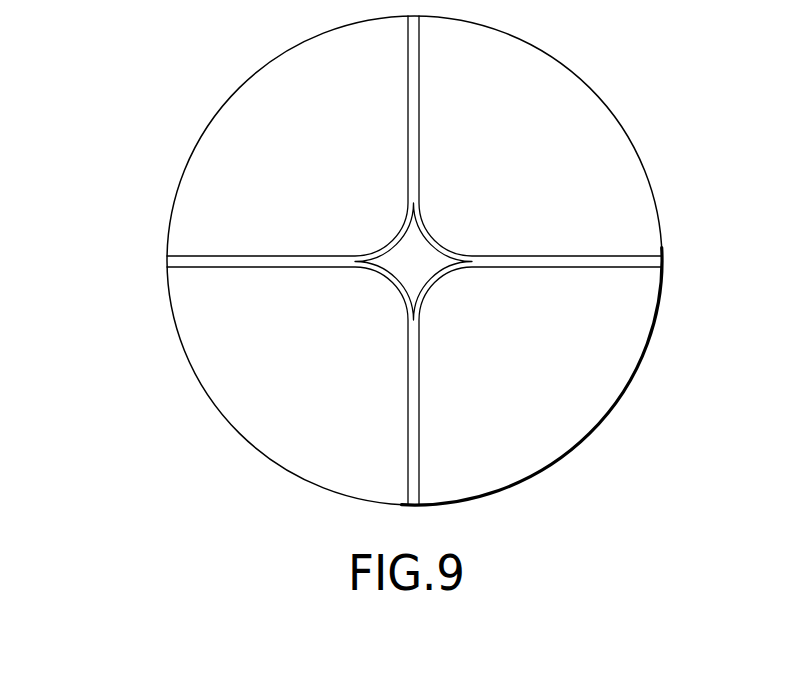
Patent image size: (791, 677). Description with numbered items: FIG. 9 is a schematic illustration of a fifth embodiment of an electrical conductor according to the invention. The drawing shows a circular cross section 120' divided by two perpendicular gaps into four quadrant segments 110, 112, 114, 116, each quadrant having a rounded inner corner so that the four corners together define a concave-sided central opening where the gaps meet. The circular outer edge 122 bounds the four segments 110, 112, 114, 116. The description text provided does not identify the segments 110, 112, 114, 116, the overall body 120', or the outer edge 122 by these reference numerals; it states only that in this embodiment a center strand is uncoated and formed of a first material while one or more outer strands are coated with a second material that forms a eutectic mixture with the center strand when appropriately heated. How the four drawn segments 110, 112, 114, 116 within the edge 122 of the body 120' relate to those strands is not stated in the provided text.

The first quadrant segment 110 is at (323, 161).
The second quadrant segment 112 is at (543, 163).
The third quadrant segment 114 is at (328, 373).
The fourth quadrant segment 116 is at (540, 378).
The segmented disc assembly 120' is at (367, 274).
The outer circumferential edge 122 is at (580, 447).